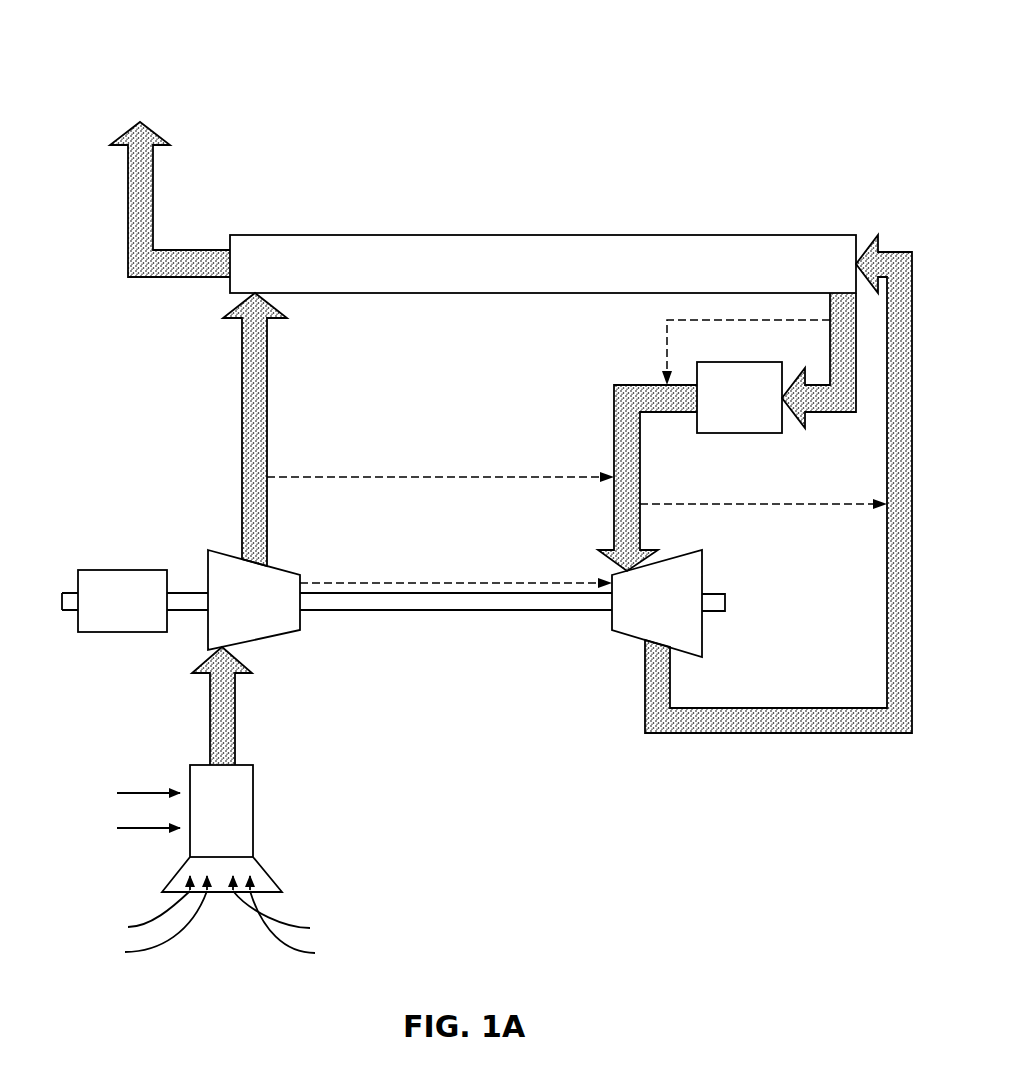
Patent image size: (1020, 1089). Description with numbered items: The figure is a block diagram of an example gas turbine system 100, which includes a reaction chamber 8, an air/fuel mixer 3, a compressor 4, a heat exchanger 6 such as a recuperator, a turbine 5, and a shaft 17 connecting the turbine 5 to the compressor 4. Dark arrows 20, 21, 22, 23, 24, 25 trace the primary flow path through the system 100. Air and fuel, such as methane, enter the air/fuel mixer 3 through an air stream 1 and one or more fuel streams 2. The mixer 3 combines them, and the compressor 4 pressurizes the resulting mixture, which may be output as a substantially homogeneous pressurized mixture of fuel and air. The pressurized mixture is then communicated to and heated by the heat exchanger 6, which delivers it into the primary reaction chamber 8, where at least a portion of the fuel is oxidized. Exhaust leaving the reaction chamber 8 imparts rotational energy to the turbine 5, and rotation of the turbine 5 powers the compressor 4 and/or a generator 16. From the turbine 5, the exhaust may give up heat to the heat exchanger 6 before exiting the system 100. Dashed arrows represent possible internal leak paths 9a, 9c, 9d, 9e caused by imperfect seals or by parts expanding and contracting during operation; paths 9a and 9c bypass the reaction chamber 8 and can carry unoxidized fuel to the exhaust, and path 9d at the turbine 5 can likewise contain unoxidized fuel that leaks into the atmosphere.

The gas turbine system 100 is at (118, 56).
The air stream 1 is at (148, 923).
The fuel streams 2 is at (132, 792).
The air/fuel mixer 3 is at (253, 812).
The compressor 4 is at (262, 618).
The turbine 5 is at (667, 618).
The heat exchanger 6 is at (551, 277).
The reaction chamber 8 is at (748, 413).
The internal leak path 9a is at (432, 471).
The internal leak path 9c is at (657, 347).
The internal leak path 9d is at (798, 505).
The internal leak path 9e is at (430, 583).
The generator 16 is at (139, 616).
The shaft 17 is at (472, 612).
The dark arrow 20 is at (235, 727).
The dark arrow 21 is at (242, 472).
The dark arrow 22 is at (830, 413).
The dark arrow 23 is at (613, 427).
The dark arrow 24 is at (798, 735).
The dark arrow 25 is at (155, 197).